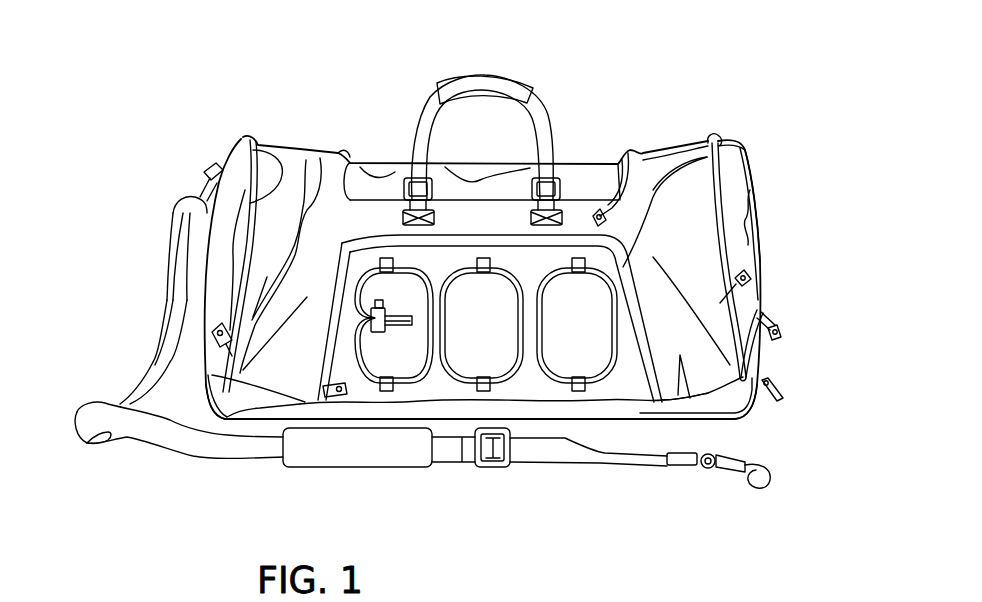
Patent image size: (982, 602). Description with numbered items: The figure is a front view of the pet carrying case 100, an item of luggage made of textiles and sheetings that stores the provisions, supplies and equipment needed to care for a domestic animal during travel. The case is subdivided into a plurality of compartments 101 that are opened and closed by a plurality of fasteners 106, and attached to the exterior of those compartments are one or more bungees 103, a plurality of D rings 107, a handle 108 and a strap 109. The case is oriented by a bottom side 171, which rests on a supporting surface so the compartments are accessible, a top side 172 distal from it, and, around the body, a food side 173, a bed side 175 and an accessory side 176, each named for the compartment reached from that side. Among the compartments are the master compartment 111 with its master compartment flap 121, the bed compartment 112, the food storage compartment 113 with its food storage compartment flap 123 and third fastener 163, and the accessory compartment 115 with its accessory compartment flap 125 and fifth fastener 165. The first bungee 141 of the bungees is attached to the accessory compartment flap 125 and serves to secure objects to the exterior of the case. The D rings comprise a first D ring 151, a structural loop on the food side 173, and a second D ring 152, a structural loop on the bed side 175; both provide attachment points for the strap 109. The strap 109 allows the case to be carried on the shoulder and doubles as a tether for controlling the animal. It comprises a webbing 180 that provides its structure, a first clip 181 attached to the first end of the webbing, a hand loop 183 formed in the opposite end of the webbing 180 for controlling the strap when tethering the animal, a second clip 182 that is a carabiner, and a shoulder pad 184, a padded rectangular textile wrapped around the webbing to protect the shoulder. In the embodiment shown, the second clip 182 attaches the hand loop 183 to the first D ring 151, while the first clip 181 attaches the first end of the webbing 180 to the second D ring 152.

The pet carrying case 100 is at (115, 92).
The plurality of compartments 101 is at (247, 160).
The one or more bungees 103 is at (522, 290).
The plurality of fasteners 106 is at (240, 172).
The plurality of D rings 107 is at (197, 173).
The handle 108 is at (547, 115).
The strap 109 is at (210, 460).
The master compartment 111 is at (392, 157).
The bed compartment 112 is at (757, 367).
The food storage compartment 113 is at (213, 287).
The accessory compartment 115 is at (340, 357).
The master compartment flap 121 is at (373, 157).
The food storage compartment flap 123 is at (217, 257).
The accessory compartment flap 125 is at (433, 380).
The first bungee 141 is at (600, 380).
The first D ring 151 is at (220, 165).
The second D ring 152 is at (780, 407).
The third fastener 163 is at (252, 203).
The fifth fastener 165 is at (640, 338).
The bottom side 171 is at (727, 420).
The top side 172 is at (685, 147).
The food side 173 is at (207, 317).
The bed side 175 is at (760, 247).
The accessory side 176 is at (270, 367).
The webbing 180 is at (523, 450).
The first clip 181 is at (763, 490).
The second clip 182 is at (203, 188).
The hand loop 183 is at (173, 207).
The shoulder pad 184 is at (388, 464).